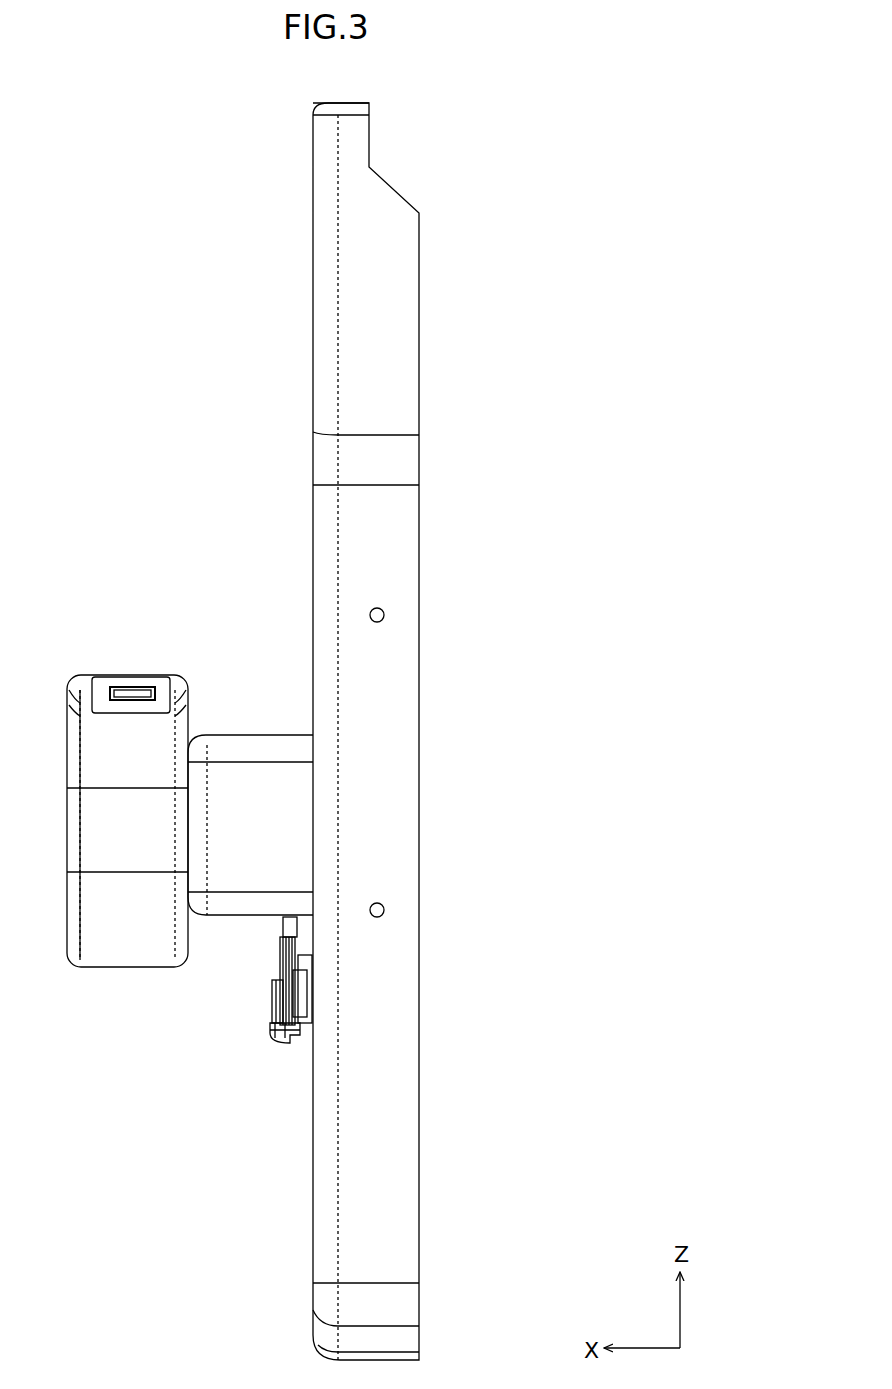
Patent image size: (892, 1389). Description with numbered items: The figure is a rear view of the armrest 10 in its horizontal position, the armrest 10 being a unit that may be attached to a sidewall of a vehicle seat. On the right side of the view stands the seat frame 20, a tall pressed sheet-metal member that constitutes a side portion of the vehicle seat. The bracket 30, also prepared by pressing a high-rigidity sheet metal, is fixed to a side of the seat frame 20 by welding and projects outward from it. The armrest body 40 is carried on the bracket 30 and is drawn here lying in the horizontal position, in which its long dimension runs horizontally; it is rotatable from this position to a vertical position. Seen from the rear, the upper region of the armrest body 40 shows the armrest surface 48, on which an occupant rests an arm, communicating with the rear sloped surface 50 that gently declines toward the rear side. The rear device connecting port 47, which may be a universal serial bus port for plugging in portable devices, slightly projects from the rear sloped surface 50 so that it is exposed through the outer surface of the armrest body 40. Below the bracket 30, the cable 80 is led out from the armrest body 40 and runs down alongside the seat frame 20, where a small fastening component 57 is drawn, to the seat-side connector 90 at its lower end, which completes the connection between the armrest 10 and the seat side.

The armrest 10 is at (184, 798).
The seat frame 20 is at (303, 507).
The bracket 30 is at (253, 722).
The armrest body 40 is at (123, 775).
The rear device connecting port 47 is at (137, 682).
The armrest surface 48 is at (107, 677).
The rear sloped surface 50 is at (83, 692).
The fastener 57 is at (262, 1000).
The cable 80 is at (285, 927).
The seat-side connector 90 is at (276, 1055).